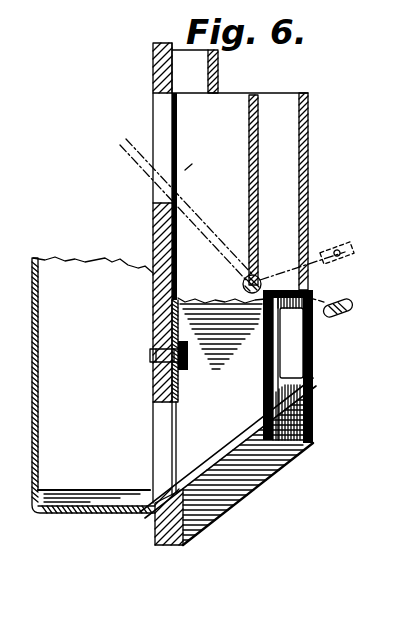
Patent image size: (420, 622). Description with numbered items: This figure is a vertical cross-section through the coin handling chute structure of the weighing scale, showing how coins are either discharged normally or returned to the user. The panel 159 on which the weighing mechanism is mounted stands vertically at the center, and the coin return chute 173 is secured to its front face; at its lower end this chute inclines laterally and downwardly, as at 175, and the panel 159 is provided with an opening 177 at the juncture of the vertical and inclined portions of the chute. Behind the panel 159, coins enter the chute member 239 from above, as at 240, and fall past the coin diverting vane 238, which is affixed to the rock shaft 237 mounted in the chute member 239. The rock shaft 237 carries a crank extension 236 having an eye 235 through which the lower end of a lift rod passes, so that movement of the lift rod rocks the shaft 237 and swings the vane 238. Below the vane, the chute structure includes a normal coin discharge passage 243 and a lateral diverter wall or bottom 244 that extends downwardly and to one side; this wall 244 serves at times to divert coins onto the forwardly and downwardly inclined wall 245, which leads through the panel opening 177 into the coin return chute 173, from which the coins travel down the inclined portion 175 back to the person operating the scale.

The panel 159 is at (163, 222).
The coin return chute 173 is at (93, 385).
The inclined chute portion 175 is at (98, 508).
The panel opening 177 is at (170, 443).
The eye 235 is at (346, 257).
The crank extension 236 is at (342, 313).
The rock shaft 237 is at (258, 272).
The coin diverting vane 238 is at (249, 151).
The chute member 239 is at (309, 113).
The coin entry 240 is at (195, 86).
The normal coin discharge passage 243 is at (221, 540).
The lateral diverter wall 244 is at (292, 352).
The inclined wall 245 is at (214, 447).